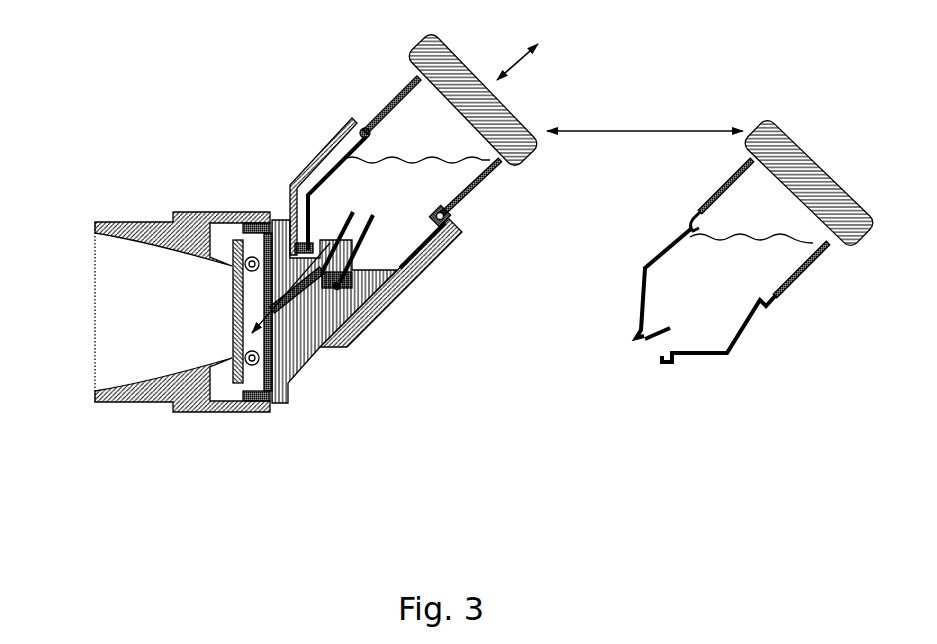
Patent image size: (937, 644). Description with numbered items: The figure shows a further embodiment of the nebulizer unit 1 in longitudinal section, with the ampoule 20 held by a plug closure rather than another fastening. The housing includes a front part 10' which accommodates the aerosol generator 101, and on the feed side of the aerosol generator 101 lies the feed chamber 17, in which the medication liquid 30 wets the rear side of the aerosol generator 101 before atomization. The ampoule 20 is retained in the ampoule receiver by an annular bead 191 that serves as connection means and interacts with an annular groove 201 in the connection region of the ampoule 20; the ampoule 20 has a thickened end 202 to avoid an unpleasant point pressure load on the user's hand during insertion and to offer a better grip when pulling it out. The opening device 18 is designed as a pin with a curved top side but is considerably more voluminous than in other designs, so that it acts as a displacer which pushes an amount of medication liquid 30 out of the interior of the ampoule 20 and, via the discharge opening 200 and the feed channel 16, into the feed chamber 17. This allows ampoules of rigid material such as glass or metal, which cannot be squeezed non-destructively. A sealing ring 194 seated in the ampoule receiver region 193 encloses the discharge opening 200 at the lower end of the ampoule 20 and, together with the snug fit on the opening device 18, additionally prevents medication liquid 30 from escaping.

The loudspeaker assembly 1 is at (197, 103).
The front part 10' is at (183, 330).
The feed channel 16 is at (297, 277).
The feed chamber 17 is at (292, 390).
The opening device 18 is at (387, 217).
The ampoule 20 is at (645, 122).
The medication liquid 30 is at (586, 259).
The aerosol generator 101 is at (232, 318).
The annular bead 191 is at (450, 237).
The clamping block 193 is at (383, 313).
The sealing ring 194 is at (290, 222).
The discharge opening 200 is at (650, 352).
The annular groove 201 is at (366, 125).
The magnet 202 is at (533, 117).